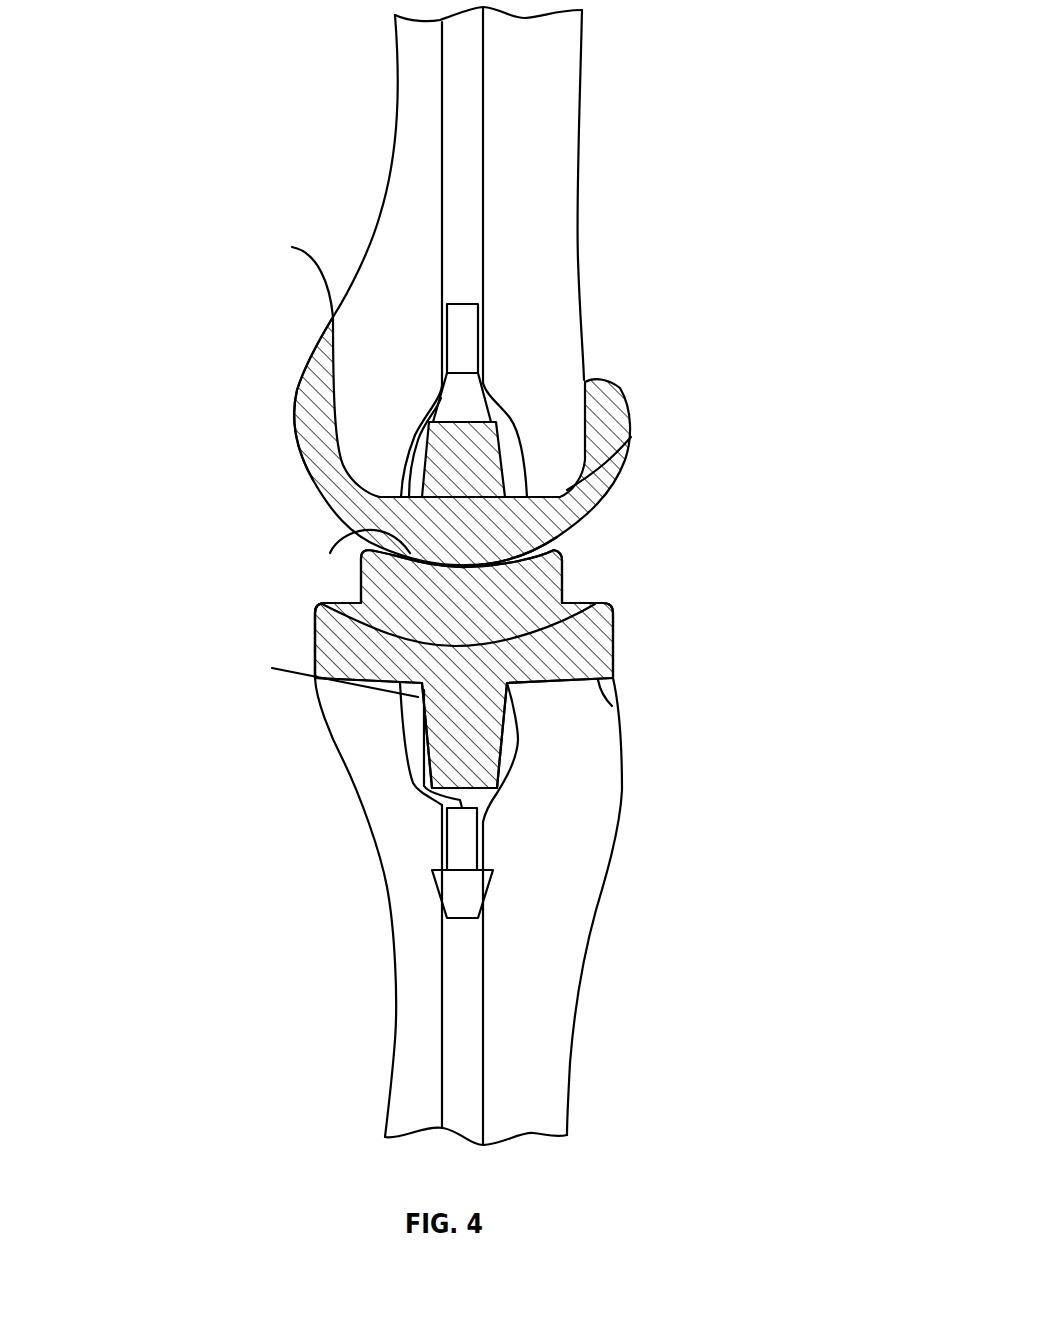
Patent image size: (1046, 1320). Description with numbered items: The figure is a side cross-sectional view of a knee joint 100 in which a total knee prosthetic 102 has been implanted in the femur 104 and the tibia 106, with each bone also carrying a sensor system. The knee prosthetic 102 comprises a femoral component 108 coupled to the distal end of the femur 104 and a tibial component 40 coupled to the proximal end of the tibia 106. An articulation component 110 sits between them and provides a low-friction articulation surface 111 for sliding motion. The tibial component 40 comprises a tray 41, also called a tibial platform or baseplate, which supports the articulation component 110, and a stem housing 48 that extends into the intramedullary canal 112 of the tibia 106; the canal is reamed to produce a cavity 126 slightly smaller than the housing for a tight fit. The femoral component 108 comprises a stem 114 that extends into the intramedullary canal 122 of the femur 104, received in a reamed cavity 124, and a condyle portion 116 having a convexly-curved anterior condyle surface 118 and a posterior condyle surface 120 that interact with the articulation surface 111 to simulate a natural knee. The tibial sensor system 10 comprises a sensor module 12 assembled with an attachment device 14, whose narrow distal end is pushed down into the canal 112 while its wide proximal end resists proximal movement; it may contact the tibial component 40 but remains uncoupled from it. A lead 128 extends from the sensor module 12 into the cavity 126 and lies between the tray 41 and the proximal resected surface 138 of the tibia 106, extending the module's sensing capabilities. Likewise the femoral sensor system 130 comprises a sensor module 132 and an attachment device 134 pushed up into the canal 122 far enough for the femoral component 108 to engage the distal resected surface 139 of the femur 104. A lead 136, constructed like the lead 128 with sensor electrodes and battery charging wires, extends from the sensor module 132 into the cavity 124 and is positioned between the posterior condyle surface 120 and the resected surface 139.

The sensor system 10 is at (410, 888).
The sensor module 12 is at (460, 840).
The attachment device 14 is at (460, 878).
The tibial component 40 is at (626, 636).
The tray 41 is at (325, 667).
The stem housing 48 is at (495, 717).
The knee joint 100 is at (444, 911).
The total knee prosthetic 102 is at (460, 674).
The femur 104 is at (565, 125).
The tibia 106 is at (560, 985).
The femoral component 108 is at (475, 441).
The articulation component 110 is at (588, 578).
The articulation surface 111 is at (355, 555).
The intramedullary canal 112 is at (458, 1022).
The stem 114 is at (438, 443).
The condyle portion 116 is at (280, 356).
The anterior condyle surface 118 is at (560, 527).
The posterior condyle surface 120 is at (306, 465).
The intramedullary canal 122 is at (457, 229).
The cavity 124 is at (507, 442).
The cavity 126 is at (415, 745).
The lead 128 is at (290, 673).
The sensor system 130 is at (542, 328).
The sensor module 132 is at (470, 357).
The attachment device 134 is at (477, 408).
The lead 136 is at (292, 247).
The proximal resected surface 138 is at (612, 706).
The distal resected surface 139 is at (630, 438).